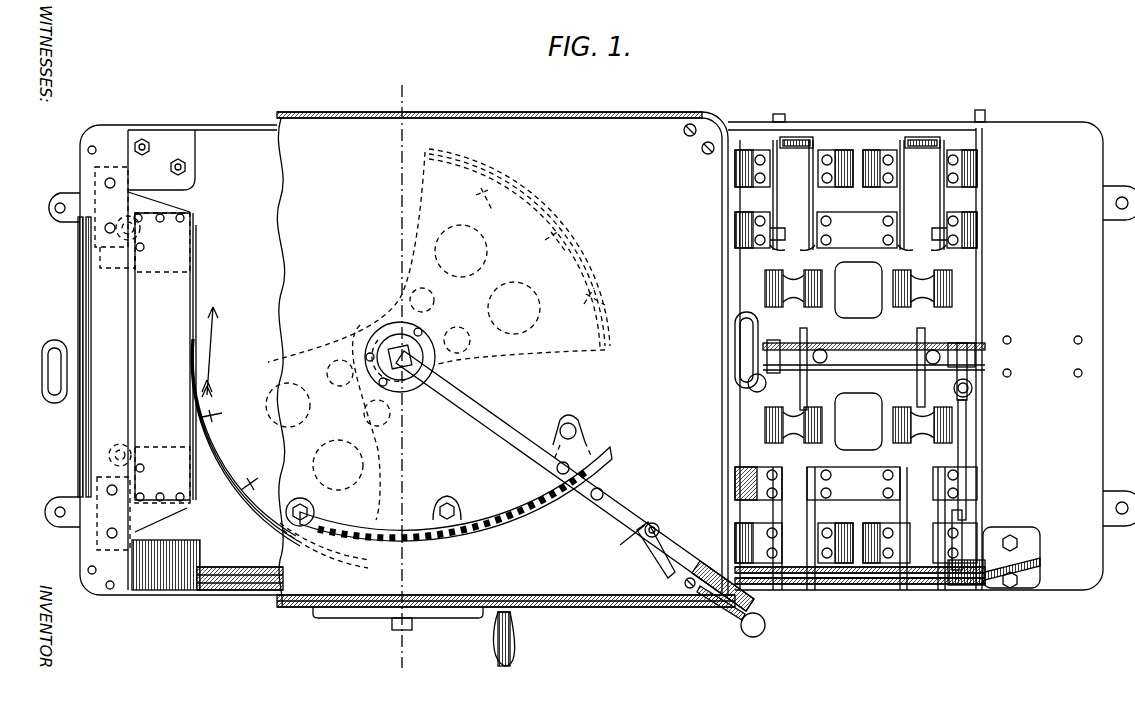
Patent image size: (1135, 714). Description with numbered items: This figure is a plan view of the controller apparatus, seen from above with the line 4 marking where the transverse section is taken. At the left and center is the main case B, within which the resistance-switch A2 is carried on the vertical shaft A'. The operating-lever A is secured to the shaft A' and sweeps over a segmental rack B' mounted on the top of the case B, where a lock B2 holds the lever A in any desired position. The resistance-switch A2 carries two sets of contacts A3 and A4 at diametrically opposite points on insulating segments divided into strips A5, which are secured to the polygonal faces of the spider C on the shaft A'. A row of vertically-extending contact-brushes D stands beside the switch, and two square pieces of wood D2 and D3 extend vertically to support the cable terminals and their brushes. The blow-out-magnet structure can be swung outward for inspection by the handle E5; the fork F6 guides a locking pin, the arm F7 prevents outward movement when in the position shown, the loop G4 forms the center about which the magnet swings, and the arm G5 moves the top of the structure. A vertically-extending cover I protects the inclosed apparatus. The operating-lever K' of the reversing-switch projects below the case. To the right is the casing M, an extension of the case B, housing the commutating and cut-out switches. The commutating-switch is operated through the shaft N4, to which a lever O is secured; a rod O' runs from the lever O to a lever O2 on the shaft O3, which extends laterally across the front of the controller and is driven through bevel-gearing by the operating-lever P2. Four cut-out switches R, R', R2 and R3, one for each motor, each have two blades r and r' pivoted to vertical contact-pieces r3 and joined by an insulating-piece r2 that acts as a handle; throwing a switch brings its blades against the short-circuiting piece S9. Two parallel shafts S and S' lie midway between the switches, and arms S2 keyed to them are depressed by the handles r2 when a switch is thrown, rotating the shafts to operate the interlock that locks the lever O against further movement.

The operating-lever A is at (575, 481).
The vertical shaft A' is at (379, 370).
The resistance-switch A2 is at (223, 352).
The set of contacts A3 is at (262, 500).
The set of contacts A4 is at (565, 240).
The insulating-strips A5 is at (319, 465).
The case B is at (506, 371).
The segmental rack B' is at (449, 514).
The lock B2 is at (652, 545).
The spider C is at (403, 268).
The contact-brushes D is at (172, 372).
The square piece of wood D2 is at (153, 259).
The square piece of wood D3 is at (162, 460).
The handle E5 is at (48, 392).
The fork F6 is at (110, 270).
The arm F7 is at (95, 238).
The loop G4 is at (108, 455).
The arm G5 is at (97, 483).
The cover I is at (76, 312).
The operating-lever of the reversing-switch K' is at (532, 639).
The inclosing casing M is at (931, 350).
The operating-shaft N4 is at (874, 359).
The lever O is at (982, 375).
The rod O' is at (990, 460).
The lever O2 is at (975, 545).
The shaft O3 is at (868, 585).
The operating-lever P2 is at (752, 638).
The cut-out switch R is at (793, 169).
The cut-out switch R' is at (922, 165).
The cut-out switch R2 is at (810, 575).
The cut-out switch R3 is at (922, 575).
The blade r is at (836, 167).
The blade r' is at (949, 165).
The insulating-piece r2 is at (808, 142).
The vertical contact-pieces r3 is at (858, 255).
The shaft S is at (874, 345).
The shaft S' is at (811, 355).
The arm S2 is at (796, 340).
The short-circuiting piece S9 is at (893, 288).
The section line 4 is at (395, 377).